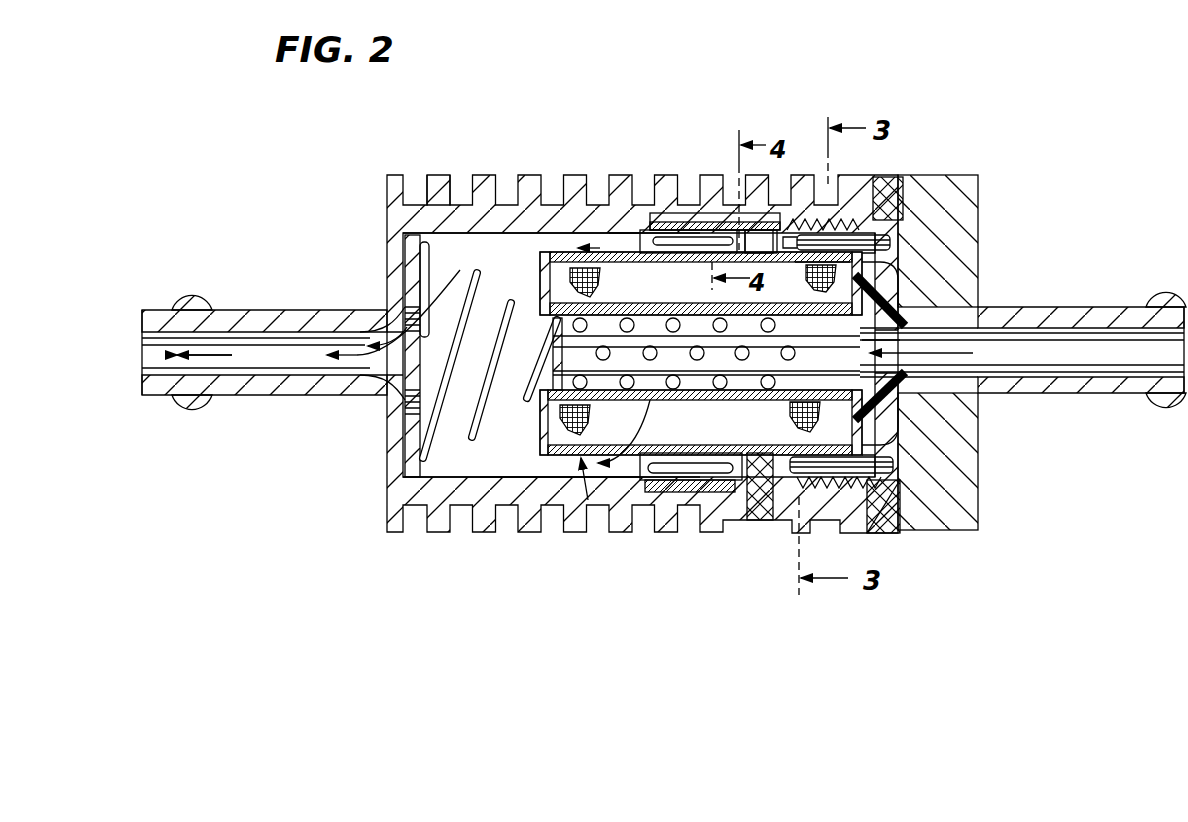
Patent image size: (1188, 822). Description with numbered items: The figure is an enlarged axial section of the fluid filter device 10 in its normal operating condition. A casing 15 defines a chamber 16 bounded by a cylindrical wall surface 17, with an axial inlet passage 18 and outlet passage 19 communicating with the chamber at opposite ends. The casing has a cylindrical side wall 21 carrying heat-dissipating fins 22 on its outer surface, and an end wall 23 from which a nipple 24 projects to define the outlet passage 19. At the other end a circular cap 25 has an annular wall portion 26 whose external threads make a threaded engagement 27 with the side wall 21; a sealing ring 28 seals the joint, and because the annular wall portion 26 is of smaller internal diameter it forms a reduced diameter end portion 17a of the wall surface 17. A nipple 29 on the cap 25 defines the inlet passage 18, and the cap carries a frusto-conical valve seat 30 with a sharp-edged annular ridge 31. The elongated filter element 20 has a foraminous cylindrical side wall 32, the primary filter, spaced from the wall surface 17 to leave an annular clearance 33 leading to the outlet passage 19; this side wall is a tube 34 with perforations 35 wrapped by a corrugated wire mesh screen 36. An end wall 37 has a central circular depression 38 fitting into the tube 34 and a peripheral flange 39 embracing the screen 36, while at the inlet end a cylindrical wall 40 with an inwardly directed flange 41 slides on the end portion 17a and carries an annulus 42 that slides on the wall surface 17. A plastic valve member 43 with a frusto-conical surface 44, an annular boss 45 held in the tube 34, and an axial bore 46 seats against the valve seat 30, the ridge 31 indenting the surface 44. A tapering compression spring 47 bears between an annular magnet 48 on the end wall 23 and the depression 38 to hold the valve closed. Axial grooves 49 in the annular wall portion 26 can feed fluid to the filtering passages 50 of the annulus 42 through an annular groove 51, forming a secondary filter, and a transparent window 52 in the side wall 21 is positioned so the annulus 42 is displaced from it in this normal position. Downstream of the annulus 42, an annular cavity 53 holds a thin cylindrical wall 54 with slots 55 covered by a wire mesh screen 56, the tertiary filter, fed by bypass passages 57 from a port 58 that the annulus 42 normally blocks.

The fluid filter device 10 is at (957, 134).
The casing 15 is at (602, 550).
The chamber 16 is at (490, 462).
The cylindrical wall surface 17 is at (543, 465).
The reduced diameter end portion 17a is at (905, 447).
The inlet passage 18 is at (1097, 360).
The outlet passage 19 is at (267, 367).
The filter element 20 is at (568, 246).
The side wall 21 is at (590, 205).
The fins 22 is at (478, 188).
The end wall 23 is at (387, 458).
The nipple 24 is at (315, 317).
The cap 25 is at (960, 215).
The annular wall portion 26 is at (868, 478).
The threaded engagement 27 is at (856, 250).
The sealing ring 28 is at (903, 495).
The nipple 29 is at (1108, 320).
The valve seat 30 is at (925, 330).
The ridge 31 is at (907, 305).
The foraminous cylindrical side wall 32 is at (578, 458).
The annular clearance 33 is at (628, 247).
The tube 34 is at (655, 393).
The perforations 35 is at (728, 358).
The wire mesh screen 36 is at (648, 300).
The end wall 37 is at (545, 277).
The circular depression 38 is at (556, 350).
The flange 39 is at (558, 456).
The cylindrical wall 40 is at (806, 288).
The inwardly directed flange 41 is at (855, 290).
The annulus 42 is at (803, 270).
The valve member 43 is at (905, 395).
The frusto-conical surface 44 is at (903, 305).
The annular boss 45 is at (829, 405).
The axial bore 46 is at (822, 327).
The compression spring 47 is at (484, 402).
The annular magnet 48 is at (420, 460).
The axial grooves 49 is at (868, 200).
The filtering passages 50 is at (790, 455).
The annular groove 51 is at (820, 235).
The window 52 is at (760, 520).
The annular cavity 53 is at (682, 492).
The thin cylindrical wall 54 is at (648, 248).
The slots 55 is at (688, 492).
The wire mesh screen 56 is at (665, 230).
The bypass passages 57 is at (756, 222).
The port 58 is at (759, 241).